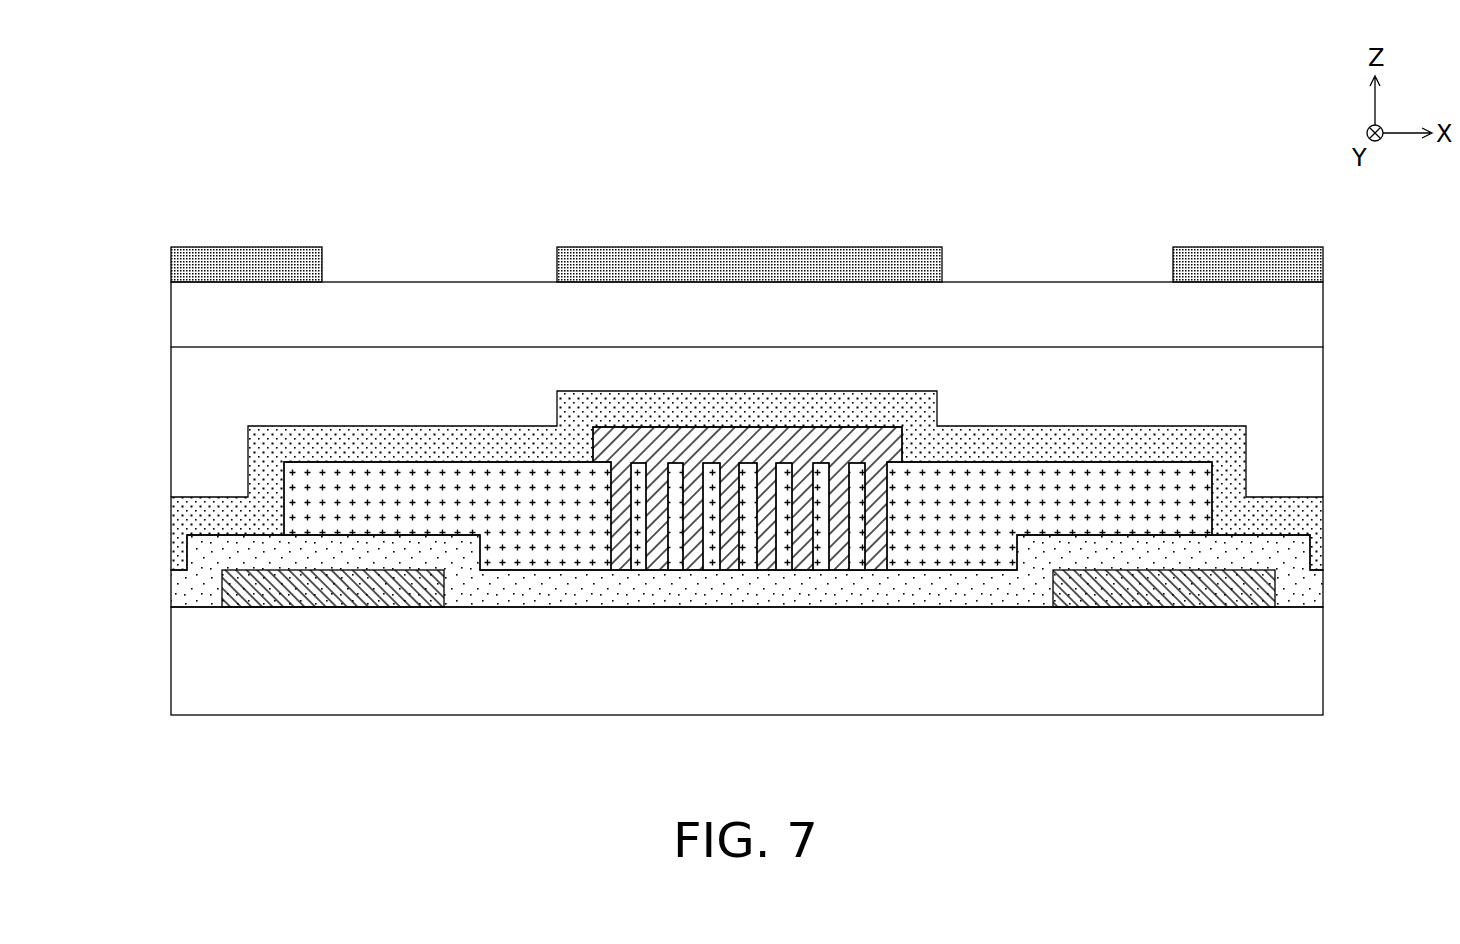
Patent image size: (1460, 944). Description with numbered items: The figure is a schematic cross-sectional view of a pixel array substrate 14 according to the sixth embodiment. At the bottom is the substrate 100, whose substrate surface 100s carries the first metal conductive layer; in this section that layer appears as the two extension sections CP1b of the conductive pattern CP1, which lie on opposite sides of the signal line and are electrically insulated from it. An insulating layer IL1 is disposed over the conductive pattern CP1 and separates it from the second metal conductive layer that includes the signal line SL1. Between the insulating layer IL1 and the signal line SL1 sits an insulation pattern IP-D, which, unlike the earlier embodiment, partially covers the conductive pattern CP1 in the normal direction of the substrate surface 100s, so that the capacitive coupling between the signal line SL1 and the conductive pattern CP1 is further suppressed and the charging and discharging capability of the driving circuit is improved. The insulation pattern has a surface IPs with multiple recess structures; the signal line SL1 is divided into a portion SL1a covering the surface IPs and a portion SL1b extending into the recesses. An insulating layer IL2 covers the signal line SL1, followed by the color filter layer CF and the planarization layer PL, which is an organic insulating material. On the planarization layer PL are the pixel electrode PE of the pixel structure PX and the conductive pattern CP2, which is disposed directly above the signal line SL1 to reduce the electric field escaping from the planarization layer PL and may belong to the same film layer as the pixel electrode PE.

The substrate 100 is at (1313, 659).
The substrate surface 100s is at (199, 595).
The insulating layer IL1 is at (1313, 590).
The insulating layer IL2 is at (1313, 518).
The color filter layer CF is at (1313, 423).
The planarization layer PL is at (1313, 316).
The pixel electrode PE is at (230, 250).
The pixel structure PX is at (747, 239).
The conductive pattern CP2 is at (845, 247).
The extension section CP1b is at (325, 595).
The conductive pattern CP1 is at (748, 670).
The portion of signal line SL1a is at (697, 447).
The portion of signal line SL1b is at (767, 558).
The signal line SL1 is at (747, 483).
The surface of insulation pattern IPs is at (1159, 452).
The insulation pattern IP-D is at (903, 553).
The pixel array substrate 14 is at (1437, 790).